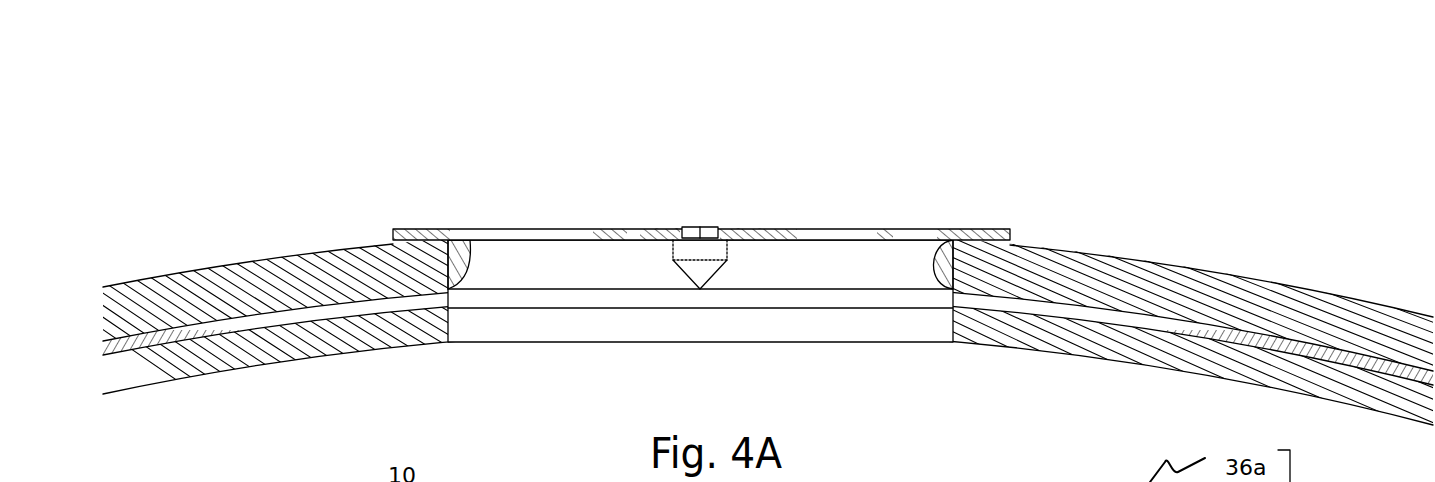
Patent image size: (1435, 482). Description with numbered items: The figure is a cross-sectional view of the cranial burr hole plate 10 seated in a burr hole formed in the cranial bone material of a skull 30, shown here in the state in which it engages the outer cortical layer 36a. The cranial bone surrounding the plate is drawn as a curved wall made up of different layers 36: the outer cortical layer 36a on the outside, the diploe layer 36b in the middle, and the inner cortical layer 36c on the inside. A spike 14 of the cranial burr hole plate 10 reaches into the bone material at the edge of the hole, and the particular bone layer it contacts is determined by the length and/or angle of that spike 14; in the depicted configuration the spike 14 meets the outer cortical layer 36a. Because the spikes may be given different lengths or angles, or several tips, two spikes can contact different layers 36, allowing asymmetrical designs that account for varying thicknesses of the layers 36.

The cranial burr hole plate 10 is at (676, 186).
The spike 14 is at (458, 265).
The skull 30 is at (717, 244).
The layers of the cranial bone material 36 is at (717, 244).
The outer cortical layer 36a is at (977, 260).
The diploe layer 36b is at (1000, 303).
The inner cortical layer 36c is at (1033, 338).